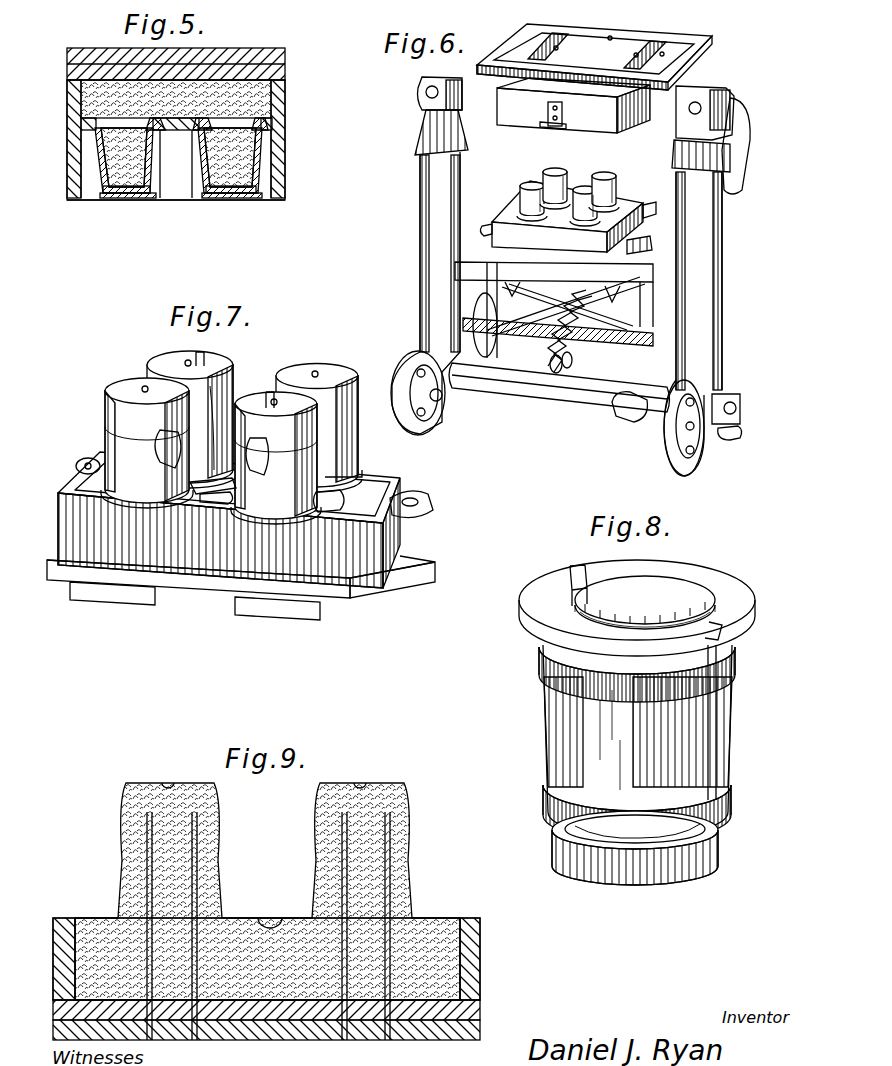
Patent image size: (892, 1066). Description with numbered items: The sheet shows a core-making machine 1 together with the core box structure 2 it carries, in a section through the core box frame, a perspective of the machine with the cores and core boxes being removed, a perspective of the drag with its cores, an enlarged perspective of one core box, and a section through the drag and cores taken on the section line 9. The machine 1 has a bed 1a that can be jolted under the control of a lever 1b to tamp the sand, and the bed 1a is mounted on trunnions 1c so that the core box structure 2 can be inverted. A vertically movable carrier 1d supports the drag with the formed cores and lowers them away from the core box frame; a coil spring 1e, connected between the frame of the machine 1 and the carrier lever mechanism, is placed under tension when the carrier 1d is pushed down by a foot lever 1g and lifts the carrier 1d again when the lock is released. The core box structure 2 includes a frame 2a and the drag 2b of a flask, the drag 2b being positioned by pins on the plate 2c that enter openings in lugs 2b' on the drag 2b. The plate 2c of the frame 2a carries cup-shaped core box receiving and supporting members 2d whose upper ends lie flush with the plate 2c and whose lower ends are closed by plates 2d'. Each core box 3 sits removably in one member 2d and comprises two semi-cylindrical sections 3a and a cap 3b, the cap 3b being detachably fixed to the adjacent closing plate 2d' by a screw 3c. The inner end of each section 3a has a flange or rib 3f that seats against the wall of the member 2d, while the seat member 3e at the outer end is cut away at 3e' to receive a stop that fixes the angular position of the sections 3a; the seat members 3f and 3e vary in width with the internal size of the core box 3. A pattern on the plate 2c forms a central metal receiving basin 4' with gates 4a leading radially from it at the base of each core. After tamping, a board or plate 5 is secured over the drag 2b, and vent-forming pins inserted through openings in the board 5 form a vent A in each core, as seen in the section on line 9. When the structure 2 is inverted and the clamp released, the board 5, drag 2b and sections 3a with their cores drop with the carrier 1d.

In FIG. 6, the machine 1 is at (568, 314).
In FIG. 6, the bed 1a is at (712, 40).
In FIG. 6, the lever 1b is at (742, 434).
In FIG. 6, the trunnions 1c is at (455, 80).
In FIG. 6, the vertically movable carrier 1d is at (650, 242).
In FIG. 6, the coil spring 1e is at (592, 376).
In FIG. 6, the foot lever 1g is at (630, 416).
In FIG. 5, the core box structure 2 is at (285, 90).
In FIG. 6, the core box structure 2 is at (528, 120).
In FIG. 5, the core box frame 2a is at (285, 150).
In FIG. 5, the drag 2b is at (193, 139).
In FIG. 6, the drag 2b is at (567, 216).
In FIG. 7, the drag 2b is at (229, 528).
In FIG. 9, the drag 2b is at (284, 959).
In FIG. 6, the lugs 2b' is at (572, 205).
In FIG. 7, the lugs 2b' is at (251, 471).
In FIG. 5, the plate 2c is at (285, 126).
In FIG. 5, the cup-shaped core box receiving and supporting members 2d is at (210, 181).
In FIG. 5, the closing plates 2d' is at (176, 215).
In FIG. 6, the core box 3 is at (578, 191).
In FIG. 7, the core box 3 is at (231, 437).
In FIG. 8, the core box 3 is at (624, 741).
In FIG. 5, the semi-cylindrical core box sections 3a is at (160, 152).
In FIG. 7, the semi-cylindrical core box sections 3a is at (236, 390).
In FIG. 8, the semi-cylindrical core box sections 3a is at (546, 680).
In FIG. 5, the cap 3b is at (103, 198).
In FIG. 8, the cap 3b is at (640, 884).
In FIG. 5, the screw 3c is at (225, 118).
In FIG. 7, the seat member 3e is at (275, 485).
In FIG. 8, the seat member 3e is at (622, 598).
In FIG. 8, the cut-away portion of flange 3e' is at (631, 589).
In FIG. 7, the flange or rib 3f is at (150, 366).
In FIG. 8, the flange or rib 3f is at (731, 800).
In FIG. 7, the central metal receiving basin 4' is at (206, 523).
In FIG. 7, the gates 4a is at (200, 490).
In FIG. 9, the gates 4a is at (270, 916).
In FIG. 5, the board or plate 5 is at (283, 74).
In FIG. 7, the board or plate 5 is at (180, 582).
In FIG. 9, the board or plate 5 is at (303, 1018).
In FIG. 7, the section line 9 is at (328, 368).
In FIG. 5, the vent A is at (176, 99).
In FIG. 9, the vent A is at (195, 846).